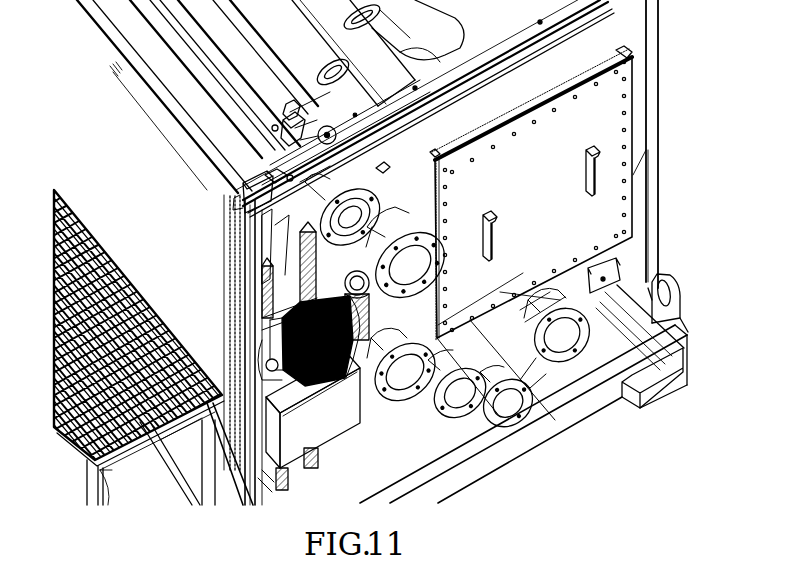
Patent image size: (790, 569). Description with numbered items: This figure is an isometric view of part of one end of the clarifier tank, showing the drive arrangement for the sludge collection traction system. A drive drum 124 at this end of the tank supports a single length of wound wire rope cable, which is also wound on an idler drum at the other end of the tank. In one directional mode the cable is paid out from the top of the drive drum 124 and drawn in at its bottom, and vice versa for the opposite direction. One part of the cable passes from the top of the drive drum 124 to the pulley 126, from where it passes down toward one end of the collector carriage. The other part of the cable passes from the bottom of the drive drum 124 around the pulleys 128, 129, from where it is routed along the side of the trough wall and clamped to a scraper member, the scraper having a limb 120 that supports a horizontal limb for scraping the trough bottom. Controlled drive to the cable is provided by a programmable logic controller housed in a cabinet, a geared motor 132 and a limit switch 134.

The limb 120 is at (317, 410).
The drive drum 124 is at (284, 319).
The pulley 126 is at (248, 186).
The pulley 128 is at (272, 174).
The pulley 129 is at (293, 110).
The geared motor 132 is at (378, 382).
The limit switch 134 is at (293, 128).